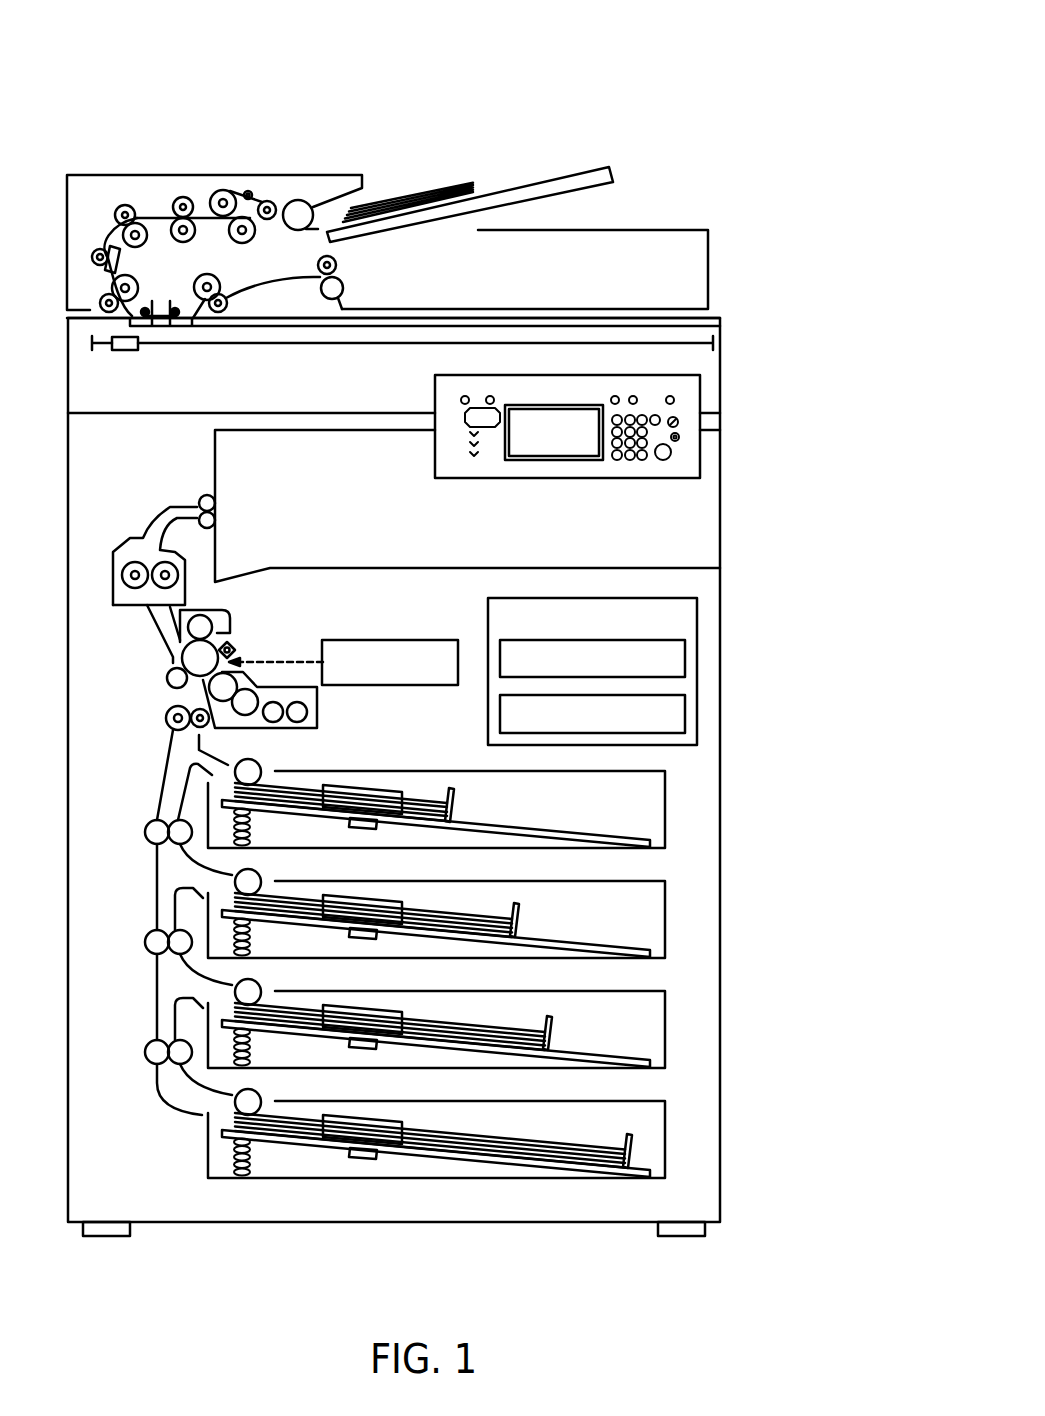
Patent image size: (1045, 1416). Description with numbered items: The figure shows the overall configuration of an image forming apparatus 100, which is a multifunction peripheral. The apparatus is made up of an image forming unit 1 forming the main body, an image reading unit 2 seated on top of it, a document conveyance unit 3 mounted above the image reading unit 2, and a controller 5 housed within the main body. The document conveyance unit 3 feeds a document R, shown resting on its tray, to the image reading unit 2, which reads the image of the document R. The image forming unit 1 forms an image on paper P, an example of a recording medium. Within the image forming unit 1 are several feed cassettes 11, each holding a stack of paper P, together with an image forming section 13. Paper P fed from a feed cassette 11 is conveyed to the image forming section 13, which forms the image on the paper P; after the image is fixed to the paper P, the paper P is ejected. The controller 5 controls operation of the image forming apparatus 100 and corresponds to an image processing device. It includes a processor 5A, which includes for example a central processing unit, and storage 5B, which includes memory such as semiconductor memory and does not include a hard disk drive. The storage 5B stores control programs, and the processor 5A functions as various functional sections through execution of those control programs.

The image forming apparatus 100 is at (682, 93).
The image forming unit 1 is at (752, 588).
The image reading unit 2 is at (728, 353).
The document conveyance unit 3 is at (401, 155).
The document R is at (456, 180).
The image forming section 13 is at (246, 637).
The controller 5 is at (698, 628).
The processor 5A is at (686, 666).
The storage 5B is at (686, 715).
The feed cassette 11 is at (665, 817).
The paper P is at (432, 800).